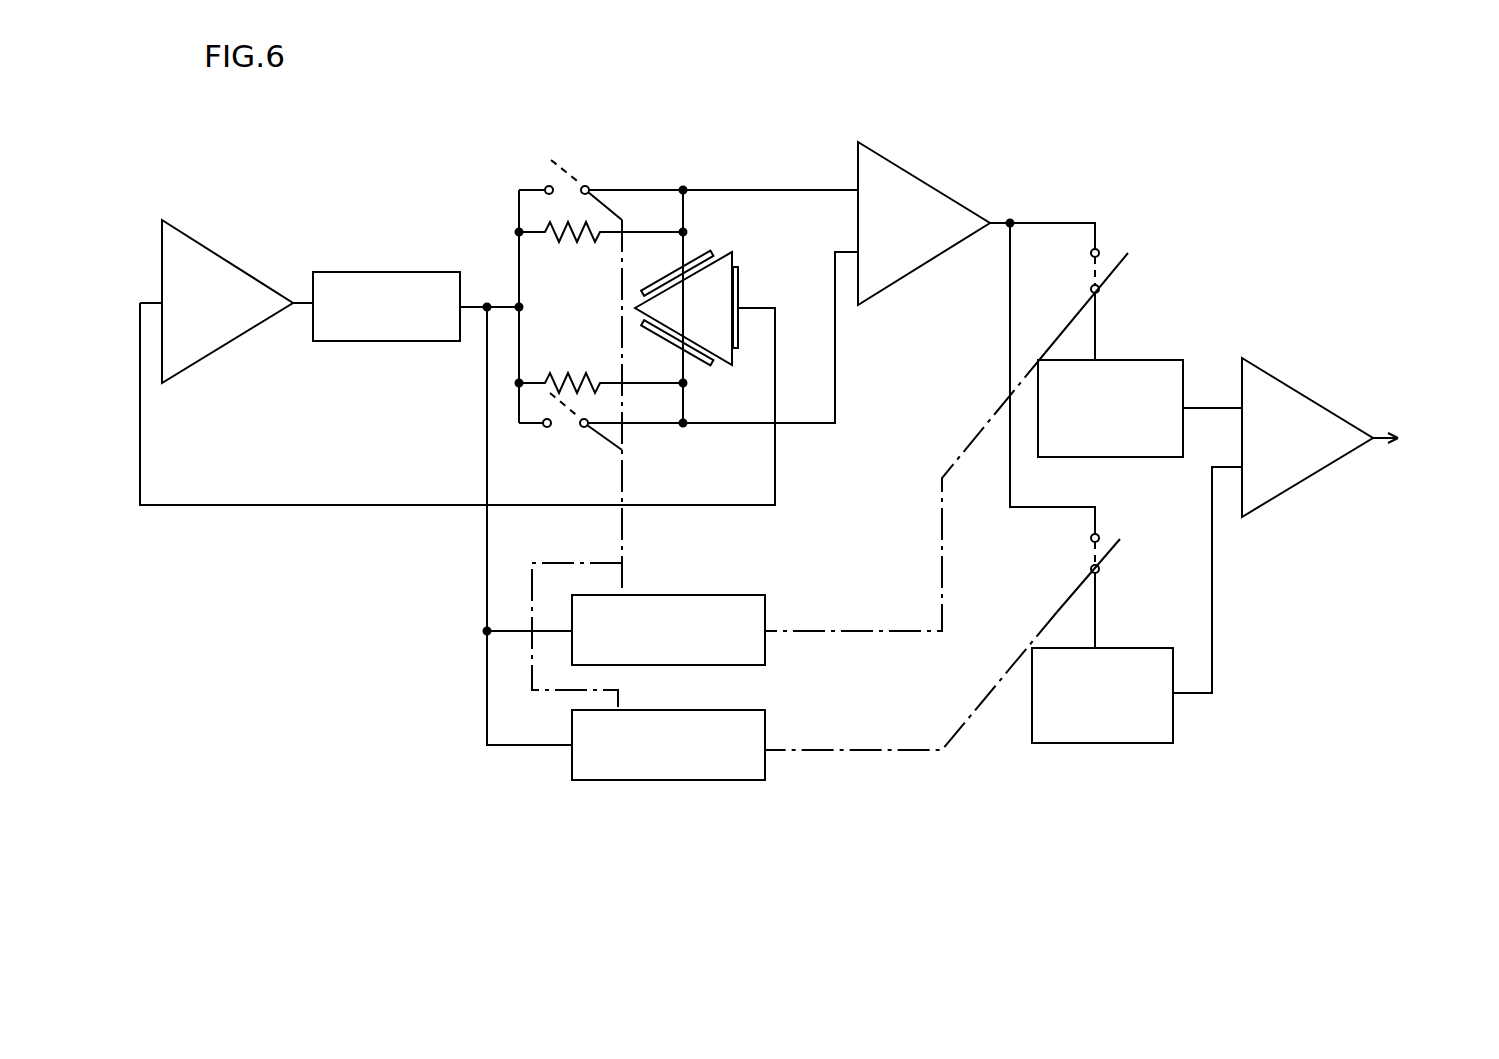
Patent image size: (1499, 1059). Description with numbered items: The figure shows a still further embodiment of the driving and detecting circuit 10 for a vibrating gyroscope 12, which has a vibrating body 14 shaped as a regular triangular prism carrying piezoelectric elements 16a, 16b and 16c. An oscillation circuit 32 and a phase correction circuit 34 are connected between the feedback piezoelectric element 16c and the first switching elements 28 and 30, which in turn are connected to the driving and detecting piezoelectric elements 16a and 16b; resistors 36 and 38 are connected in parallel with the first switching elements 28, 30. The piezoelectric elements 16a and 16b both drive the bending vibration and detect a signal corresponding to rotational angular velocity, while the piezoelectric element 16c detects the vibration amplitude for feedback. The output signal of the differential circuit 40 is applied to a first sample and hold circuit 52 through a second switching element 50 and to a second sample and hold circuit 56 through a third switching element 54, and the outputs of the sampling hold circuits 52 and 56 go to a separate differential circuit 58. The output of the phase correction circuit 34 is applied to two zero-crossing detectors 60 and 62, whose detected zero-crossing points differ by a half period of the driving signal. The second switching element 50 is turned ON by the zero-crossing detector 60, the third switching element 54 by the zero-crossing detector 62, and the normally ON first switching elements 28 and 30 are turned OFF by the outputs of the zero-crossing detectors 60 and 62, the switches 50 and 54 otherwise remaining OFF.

The driving and detecting circuit 10 is at (299, 130).
The vibrating gyroscope 12 is at (749, 234).
The vibrating body 14 is at (723, 368).
The piezoelectric element 16a is at (663, 335).
The piezoelectric element 16b is at (663, 287).
The piezoelectric element 16c is at (740, 288).
The first switching element 28 is at (560, 432).
The first switching element 30 is at (556, 186).
The oscillation circuit 32 is at (244, 273).
The phase correction circuit 34 is at (397, 272).
The resistor 36 is at (554, 378).
The resistor 38 is at (590, 240).
The differential circuit 40 is at (928, 187).
The second switching element 50 is at (1092, 285).
The first sample and hold circuit 52 is at (1152, 370).
The third switching element 54 is at (1080, 560).
The second sample and hold circuit 56 is at (1118, 647).
The separate differential circuit 58 is at (1278, 390).
The zero-crossing detector 60 is at (682, 600).
The zero-crossing detector 62 is at (677, 715).